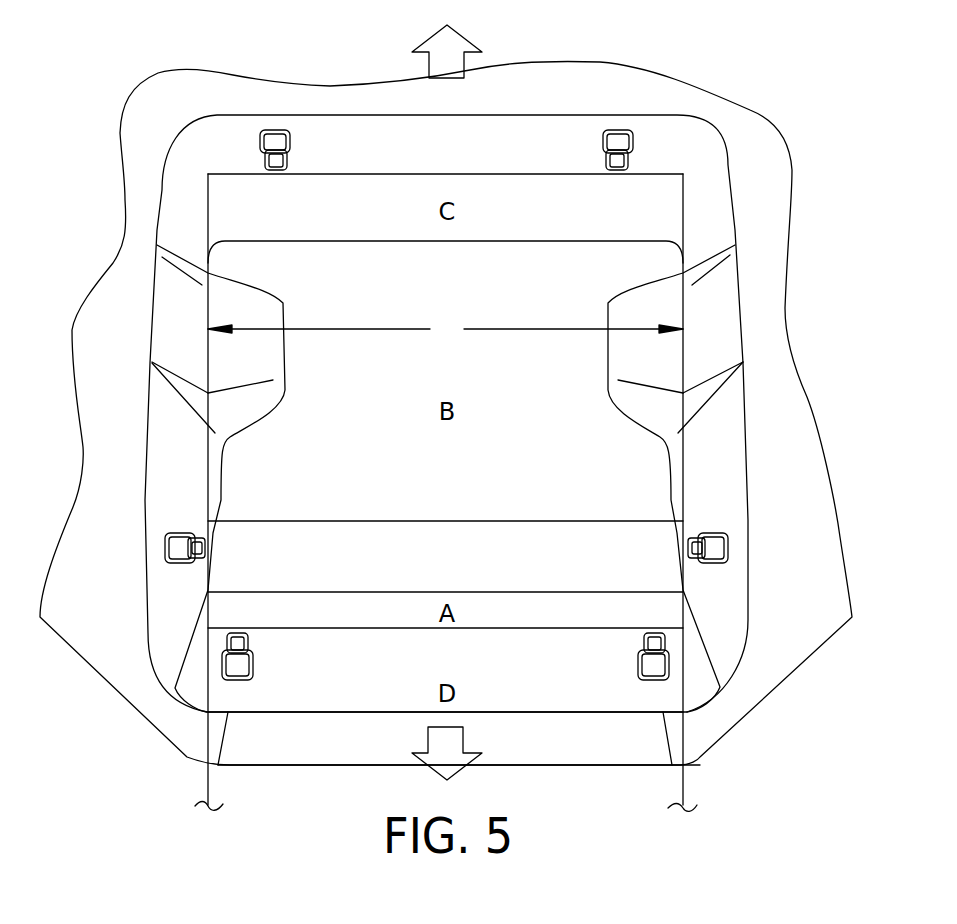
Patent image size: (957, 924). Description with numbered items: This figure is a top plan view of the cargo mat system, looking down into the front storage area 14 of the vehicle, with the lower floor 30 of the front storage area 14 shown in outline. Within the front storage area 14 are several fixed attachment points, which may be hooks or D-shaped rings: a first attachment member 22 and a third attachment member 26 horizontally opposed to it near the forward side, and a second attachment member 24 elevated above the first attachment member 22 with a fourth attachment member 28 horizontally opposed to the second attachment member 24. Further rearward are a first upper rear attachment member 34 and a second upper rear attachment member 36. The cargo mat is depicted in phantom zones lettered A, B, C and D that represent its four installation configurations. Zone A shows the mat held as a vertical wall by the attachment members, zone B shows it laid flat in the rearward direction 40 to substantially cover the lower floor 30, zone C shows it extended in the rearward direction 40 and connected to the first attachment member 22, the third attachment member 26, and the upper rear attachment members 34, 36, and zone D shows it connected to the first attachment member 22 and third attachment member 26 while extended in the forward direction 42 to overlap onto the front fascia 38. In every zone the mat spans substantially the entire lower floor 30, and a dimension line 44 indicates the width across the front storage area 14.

The front storage area 14 is at (710, 237).
The first attachment member 22 is at (227, 643).
The second attachment member 24 is at (198, 535).
The third attachment member 26 is at (642, 643).
The fourth attachment member 28 is at (697, 556).
The lower floor 30 is at (682, 102).
The first upper rear attachment member 34 is at (263, 153).
The second upper rear attachment member 36 is at (602, 155).
The front fascia 38 is at (696, 750).
The rearward direction 40 is at (443, 45).
The forward direction 42 is at (457, 758).
The width dimension 44 is at (445, 331).